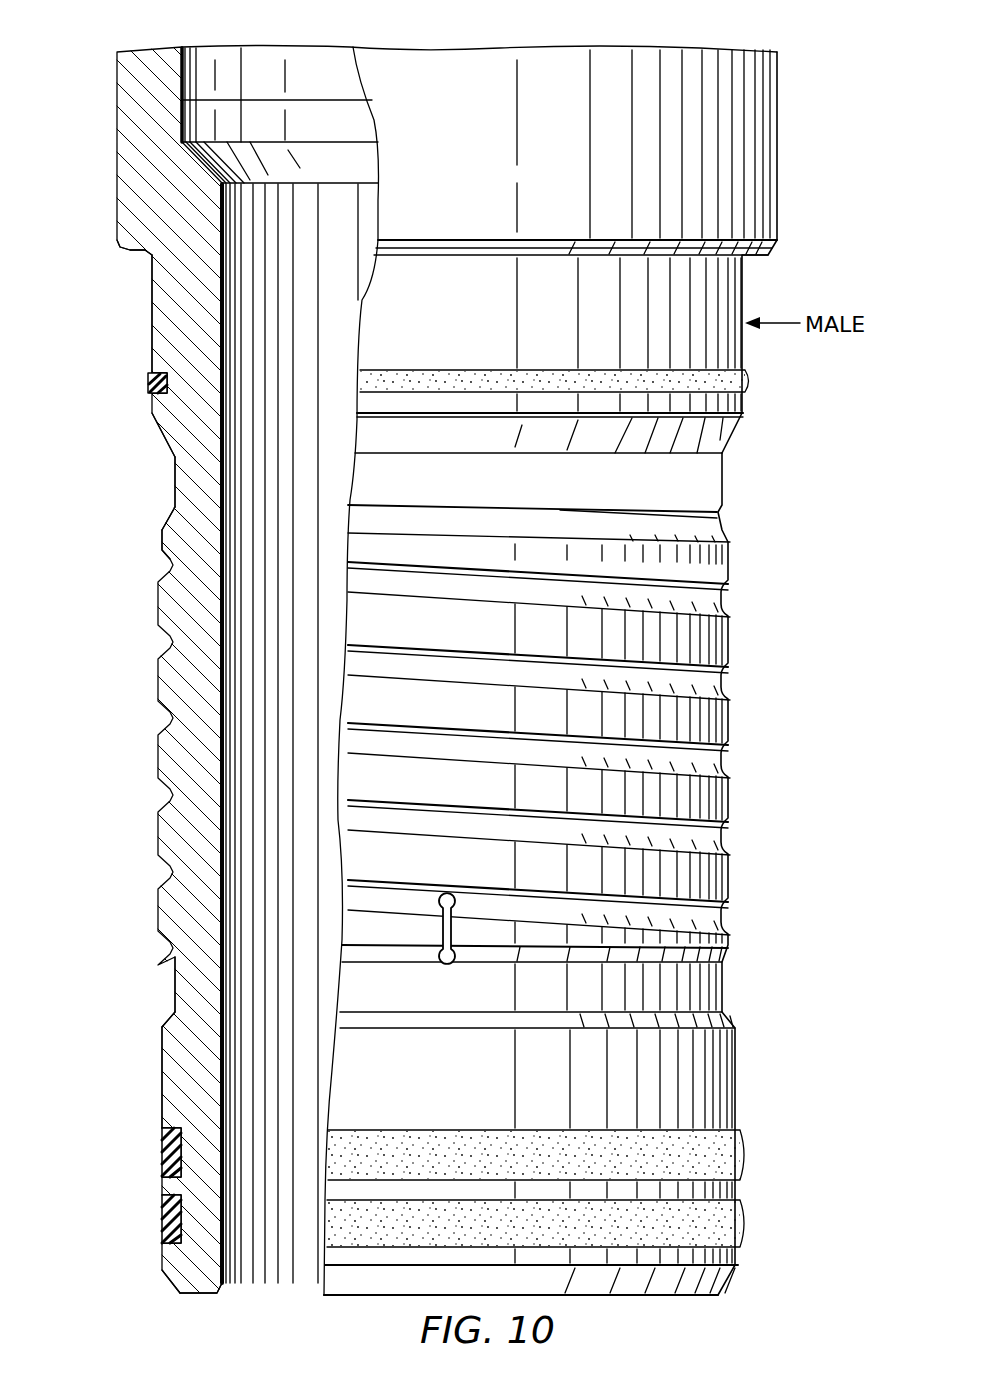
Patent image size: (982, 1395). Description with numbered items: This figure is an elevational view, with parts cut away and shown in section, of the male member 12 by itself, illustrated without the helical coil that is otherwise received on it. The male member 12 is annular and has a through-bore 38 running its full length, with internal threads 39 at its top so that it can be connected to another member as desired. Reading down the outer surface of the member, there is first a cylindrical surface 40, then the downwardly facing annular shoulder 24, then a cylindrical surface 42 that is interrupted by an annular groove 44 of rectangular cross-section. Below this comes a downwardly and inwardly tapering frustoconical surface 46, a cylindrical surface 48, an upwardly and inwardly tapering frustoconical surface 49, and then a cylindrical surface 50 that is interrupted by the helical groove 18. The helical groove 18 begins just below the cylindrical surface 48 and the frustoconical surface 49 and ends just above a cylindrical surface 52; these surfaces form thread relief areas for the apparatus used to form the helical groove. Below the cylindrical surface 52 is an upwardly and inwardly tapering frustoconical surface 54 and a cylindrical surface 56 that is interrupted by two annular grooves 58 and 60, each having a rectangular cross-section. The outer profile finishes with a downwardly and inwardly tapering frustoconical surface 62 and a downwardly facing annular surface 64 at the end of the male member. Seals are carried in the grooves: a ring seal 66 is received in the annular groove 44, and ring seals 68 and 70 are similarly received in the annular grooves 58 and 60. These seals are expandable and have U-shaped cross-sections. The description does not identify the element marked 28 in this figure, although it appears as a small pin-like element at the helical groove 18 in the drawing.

The male member 12 is at (786, 181).
The helical groove 18 is at (730, 683).
The downwardly facing annular shoulder 24 is at (130, 255).
The pin 28 is at (456, 938).
The through-bore 38 is at (228, 236).
The internal threads 39 is at (183, 75).
The cylindrical surface 40 is at (117, 160).
The cylindrical surface 42 is at (152, 320).
The annular groove 44 is at (150, 370).
The frustoconical surface 46 is at (160, 432).
The cylindrical surface 48 is at (175, 480).
The frustoconical surface 49 is at (170, 515).
The cylindrical surface 50 is at (162, 542).
The cylindrical surface 52 is at (175, 982).
The frustoconical surface 54 is at (170, 1018).
The cylindrical surface 56 is at (162, 1048).
The annular groove 58 is at (168, 1130).
The annular groove 60 is at (168, 1198).
The frustoconical surface 62 is at (172, 1282).
The downwardly facing annular surface 64 is at (196, 1295).
The ring seal 66 is at (148, 382).
The ring seal 68 is at (162, 1145).
The ring seal 70 is at (162, 1220).